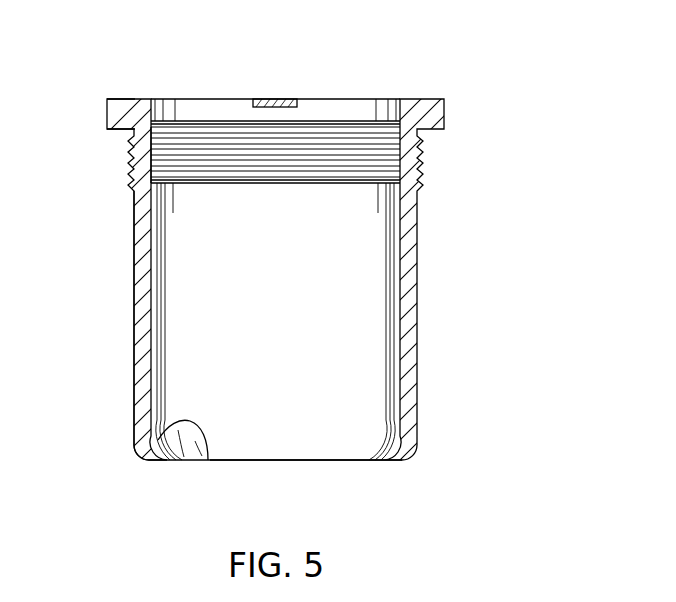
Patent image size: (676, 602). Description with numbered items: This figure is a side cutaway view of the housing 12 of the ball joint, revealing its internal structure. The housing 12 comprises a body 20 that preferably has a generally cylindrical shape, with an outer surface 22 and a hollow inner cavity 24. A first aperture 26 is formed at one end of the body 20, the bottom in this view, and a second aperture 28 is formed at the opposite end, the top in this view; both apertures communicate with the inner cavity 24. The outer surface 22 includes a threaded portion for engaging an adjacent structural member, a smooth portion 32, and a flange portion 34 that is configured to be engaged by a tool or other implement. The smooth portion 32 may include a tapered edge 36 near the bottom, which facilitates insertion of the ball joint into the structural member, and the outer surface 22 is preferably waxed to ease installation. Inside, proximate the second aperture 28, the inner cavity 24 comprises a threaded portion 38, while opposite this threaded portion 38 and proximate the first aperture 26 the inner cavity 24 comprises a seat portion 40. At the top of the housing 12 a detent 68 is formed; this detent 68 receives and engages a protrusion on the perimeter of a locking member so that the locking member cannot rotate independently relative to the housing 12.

The housing 12 is at (494, 108).
The body 20 is at (413, 323).
The outer surface 22 is at (413, 258).
The inner cavity 24 is at (293, 286).
The first aperture 26 is at (276, 440).
The second aperture 28 is at (319, 114).
The smooth portion 32 is at (141, 253).
The flange portion 34 is at (121, 116).
The tapered edge 36 is at (137, 447).
The threaded portion 38 is at (153, 140).
The seat portion 40 is at (207, 461).
The detent 68 is at (272, 102).